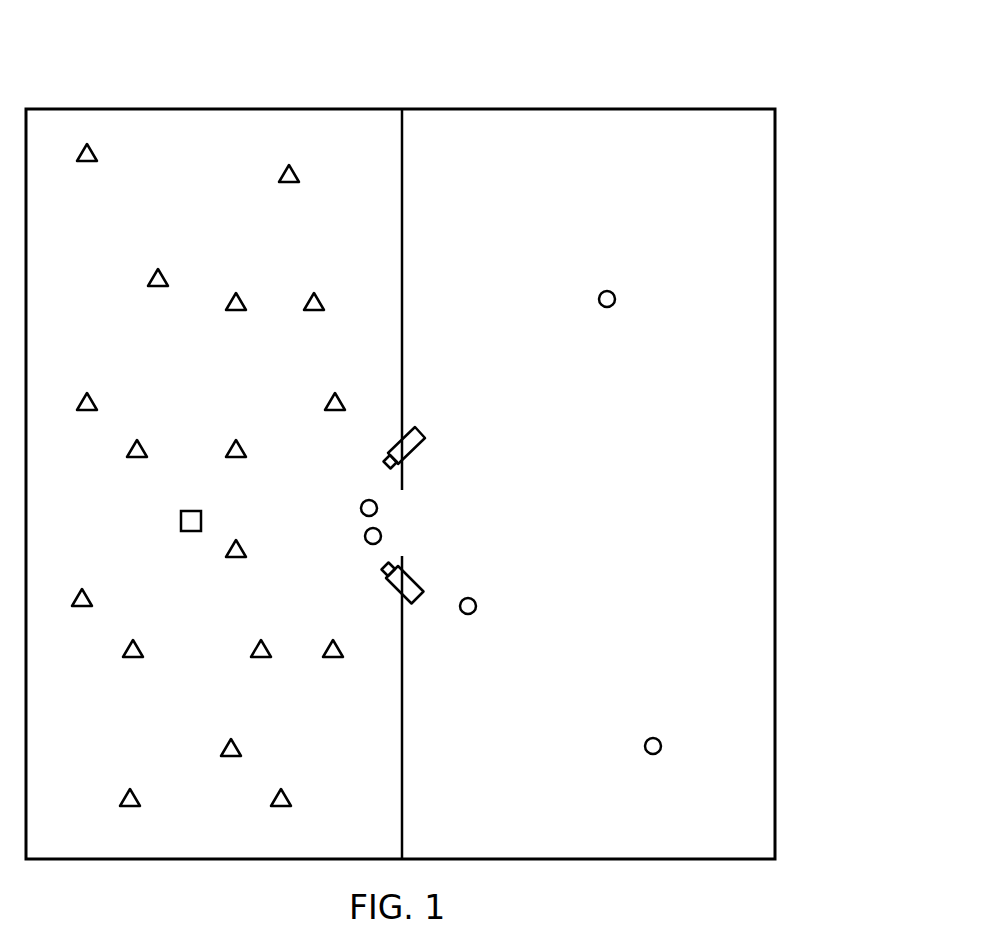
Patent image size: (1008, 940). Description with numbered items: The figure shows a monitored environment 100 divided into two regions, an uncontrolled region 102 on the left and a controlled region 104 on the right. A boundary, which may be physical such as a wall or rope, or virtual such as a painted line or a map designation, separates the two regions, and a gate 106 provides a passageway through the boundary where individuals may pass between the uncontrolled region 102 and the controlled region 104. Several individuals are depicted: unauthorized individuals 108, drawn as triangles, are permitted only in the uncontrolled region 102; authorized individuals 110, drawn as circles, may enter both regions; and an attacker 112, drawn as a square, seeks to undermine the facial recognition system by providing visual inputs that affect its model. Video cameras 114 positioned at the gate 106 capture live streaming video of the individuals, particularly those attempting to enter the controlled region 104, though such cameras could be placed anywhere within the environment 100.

The monitored environment 100 is at (461, 430).
The uncontrolled region 102 is at (212, 109).
The controlled region 104 is at (585, 109).
The gate 106 is at (401, 493).
The unauthorized individuals 108 is at (280, 181).
The authorized individuals 110 is at (598, 299).
The attacker 112 is at (180, 520).
The video cameras 114 is at (427, 437).